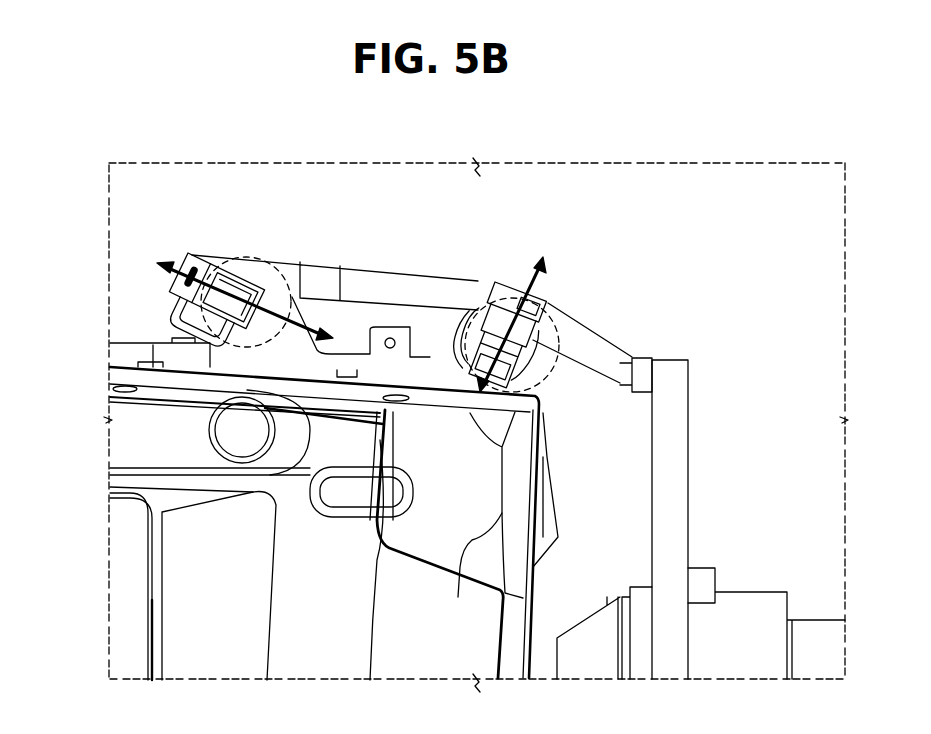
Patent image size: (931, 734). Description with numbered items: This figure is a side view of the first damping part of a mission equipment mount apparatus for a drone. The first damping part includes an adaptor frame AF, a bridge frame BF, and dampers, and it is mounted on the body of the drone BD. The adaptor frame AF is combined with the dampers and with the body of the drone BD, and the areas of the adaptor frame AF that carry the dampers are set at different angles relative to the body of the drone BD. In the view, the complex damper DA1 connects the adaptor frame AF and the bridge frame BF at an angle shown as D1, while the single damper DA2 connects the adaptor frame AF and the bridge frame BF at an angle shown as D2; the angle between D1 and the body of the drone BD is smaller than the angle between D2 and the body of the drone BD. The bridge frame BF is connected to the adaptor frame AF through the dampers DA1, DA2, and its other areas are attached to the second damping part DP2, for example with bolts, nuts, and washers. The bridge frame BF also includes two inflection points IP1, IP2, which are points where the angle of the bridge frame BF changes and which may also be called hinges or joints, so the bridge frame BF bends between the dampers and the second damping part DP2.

The body of the drone BD is at (133, 563).
The adaptor frame AF is at (165, 350).
The bridge frame BF is at (383, 283).
The first inflection point IP1 is at (192, 256).
The second inflection point IP2 is at (478, 280).
The complex damper DA1 is at (210, 262).
The single damper DA2 is at (588, 318).
The angle connecting adaptor frame and bridge frame at complex damper D1 is at (228, 291).
The angle connecting adaptor frame and bridge frame at single damper D2 is at (518, 310).
The second damping part DP2 is at (672, 428).